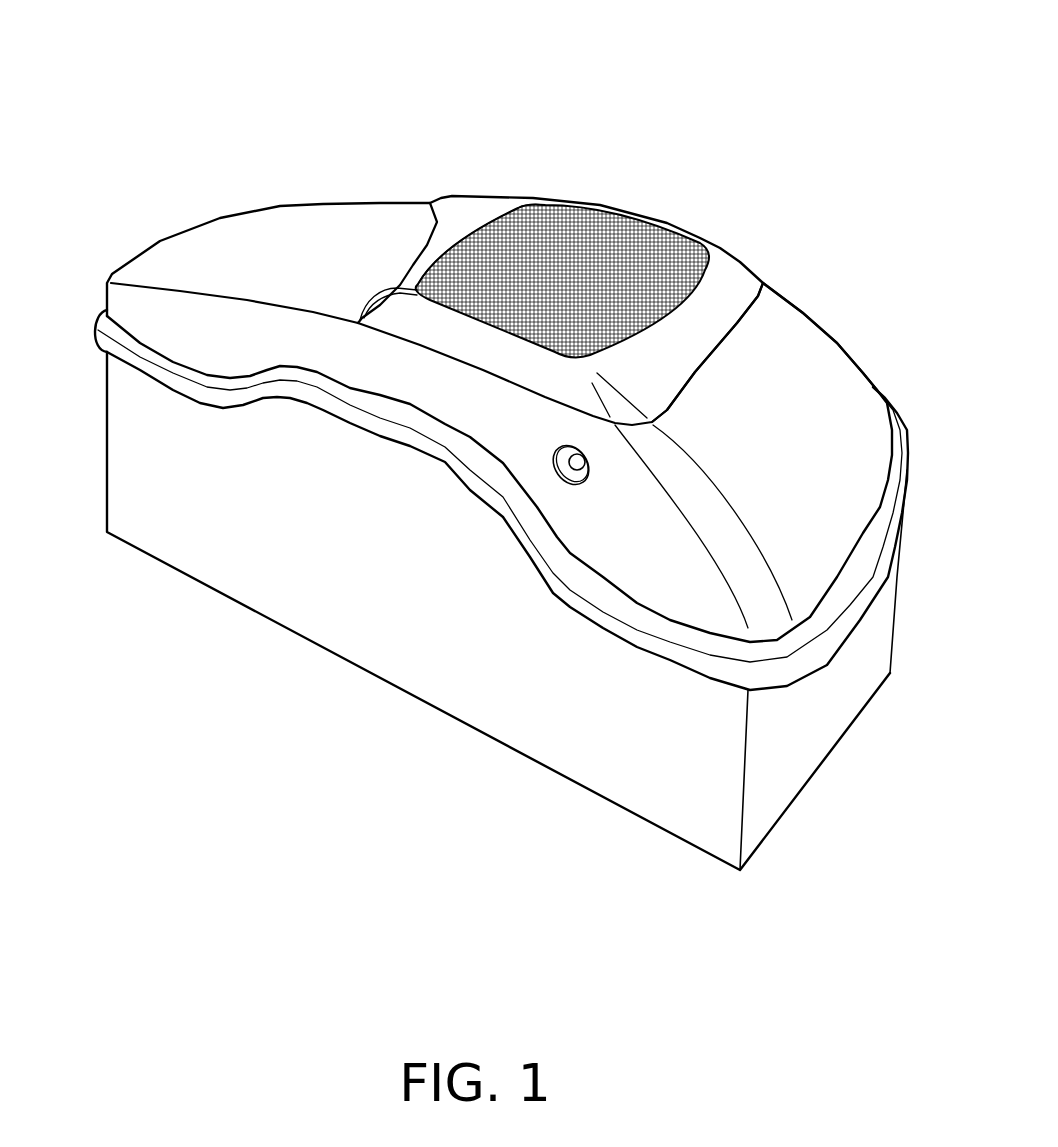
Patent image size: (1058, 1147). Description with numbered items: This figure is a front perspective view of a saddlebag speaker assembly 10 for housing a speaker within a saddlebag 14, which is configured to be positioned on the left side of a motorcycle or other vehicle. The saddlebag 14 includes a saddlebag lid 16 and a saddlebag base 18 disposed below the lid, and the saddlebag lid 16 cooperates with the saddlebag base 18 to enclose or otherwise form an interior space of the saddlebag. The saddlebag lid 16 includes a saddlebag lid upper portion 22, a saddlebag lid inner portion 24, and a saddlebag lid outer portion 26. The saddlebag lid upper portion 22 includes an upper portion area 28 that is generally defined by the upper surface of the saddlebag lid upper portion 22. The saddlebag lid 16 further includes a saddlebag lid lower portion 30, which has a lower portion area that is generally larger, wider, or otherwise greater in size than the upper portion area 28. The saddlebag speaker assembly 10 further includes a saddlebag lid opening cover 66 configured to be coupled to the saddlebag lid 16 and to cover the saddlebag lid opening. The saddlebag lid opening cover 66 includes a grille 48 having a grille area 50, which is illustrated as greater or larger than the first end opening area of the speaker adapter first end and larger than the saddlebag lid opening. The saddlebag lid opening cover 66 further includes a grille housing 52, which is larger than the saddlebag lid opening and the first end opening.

The saddlebag speaker assembly 10 is at (220, 687).
The saddlebag 14 is at (890, 695).
The saddlebag lid 16 is at (860, 427).
The saddlebag base 18 is at (880, 620).
The saddlebag lid upper portion 22 is at (668, 207).
The saddlebag lid inner portion 24 is at (127, 376).
The saddlebag lid outer portion 26 is at (837, 280).
The upper portion area 28 is at (332, 240).
The saddlebag lid lower portion 30 is at (888, 490).
The grille 48 is at (597, 247).
The grille area 50 is at (567, 267).
The grille housing 52 is at (727, 290).
The saddlebag lid opening cover 66 is at (512, 223).